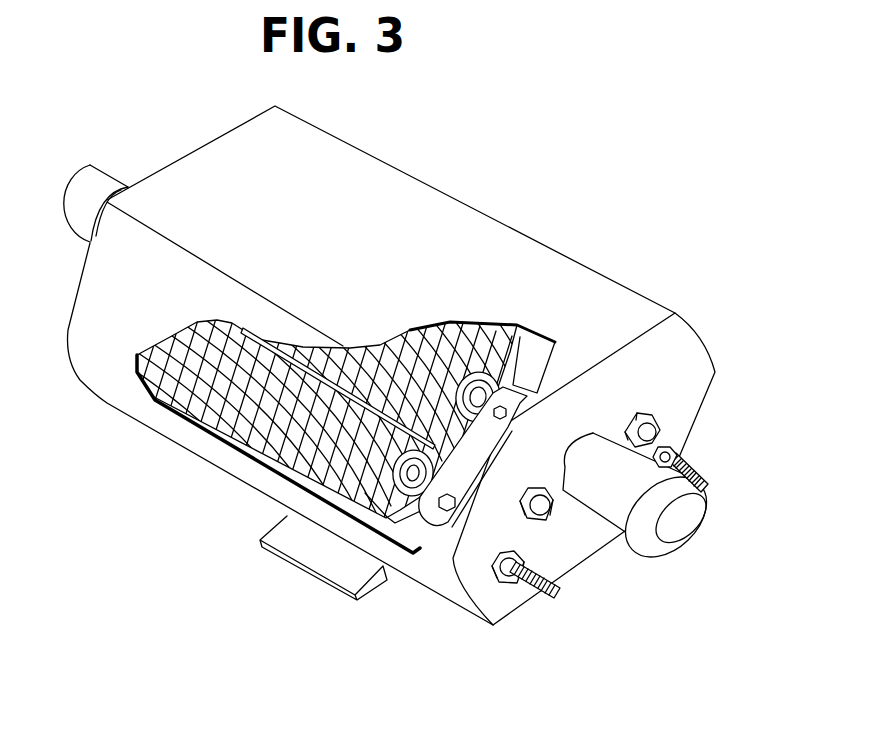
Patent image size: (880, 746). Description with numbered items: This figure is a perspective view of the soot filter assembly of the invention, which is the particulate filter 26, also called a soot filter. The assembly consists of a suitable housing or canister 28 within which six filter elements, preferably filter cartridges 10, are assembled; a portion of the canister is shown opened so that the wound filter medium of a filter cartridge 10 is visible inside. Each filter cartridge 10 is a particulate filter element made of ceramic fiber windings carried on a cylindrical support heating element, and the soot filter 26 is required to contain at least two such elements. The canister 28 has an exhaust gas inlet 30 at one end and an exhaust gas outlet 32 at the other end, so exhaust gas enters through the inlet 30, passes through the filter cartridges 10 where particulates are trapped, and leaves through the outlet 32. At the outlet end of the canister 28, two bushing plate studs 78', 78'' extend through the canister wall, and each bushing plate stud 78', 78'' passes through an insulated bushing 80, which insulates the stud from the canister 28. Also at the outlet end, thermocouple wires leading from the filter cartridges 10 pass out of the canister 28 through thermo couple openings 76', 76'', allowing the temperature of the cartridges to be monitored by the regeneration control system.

The filter cartridge 10 is at (240, 415).
The particulate filter 26 is at (514, 177).
The housing or canister 28 is at (590, 262).
The exhaust gas inlet 30 is at (90, 165).
The exhaust gas outlet 32 is at (707, 515).
The thermo couple opening 76' is at (701, 404).
The thermo couple opening 76'' is at (595, 543).
The bushing plate stud 78' is at (729, 472).
The bushing plate stud 78'' is at (540, 615).
The insulated bushing 80 is at (677, 456).